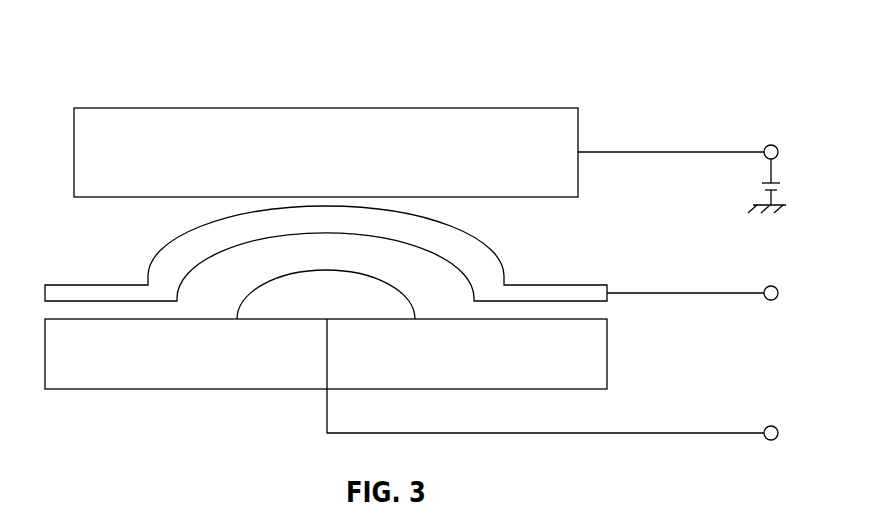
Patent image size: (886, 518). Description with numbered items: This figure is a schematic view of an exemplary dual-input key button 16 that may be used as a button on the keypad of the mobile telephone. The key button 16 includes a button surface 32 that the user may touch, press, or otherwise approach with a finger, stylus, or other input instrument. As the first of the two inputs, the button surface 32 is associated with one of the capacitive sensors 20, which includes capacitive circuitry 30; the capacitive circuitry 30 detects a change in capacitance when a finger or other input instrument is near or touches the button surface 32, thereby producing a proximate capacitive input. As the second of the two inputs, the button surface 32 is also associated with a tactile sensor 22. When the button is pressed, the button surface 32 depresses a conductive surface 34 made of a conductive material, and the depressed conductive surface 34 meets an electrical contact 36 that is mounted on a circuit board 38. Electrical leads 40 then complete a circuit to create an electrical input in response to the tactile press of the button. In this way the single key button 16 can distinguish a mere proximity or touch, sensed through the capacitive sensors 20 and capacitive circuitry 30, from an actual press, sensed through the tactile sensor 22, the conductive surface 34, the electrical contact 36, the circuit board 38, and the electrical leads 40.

The dual-input key button 16 is at (364, 87).
The capacitive sensors 20 is at (760, 133).
The tactile sensors 22 is at (768, 378).
The capacitive circuitry 30 is at (782, 184).
The button surface 32 is at (104, 107).
The conductive surface 34 is at (165, 253).
The electrical contact 36 is at (402, 293).
The circuit board 38 is at (607, 374).
The electrical leads 40 is at (607, 434).